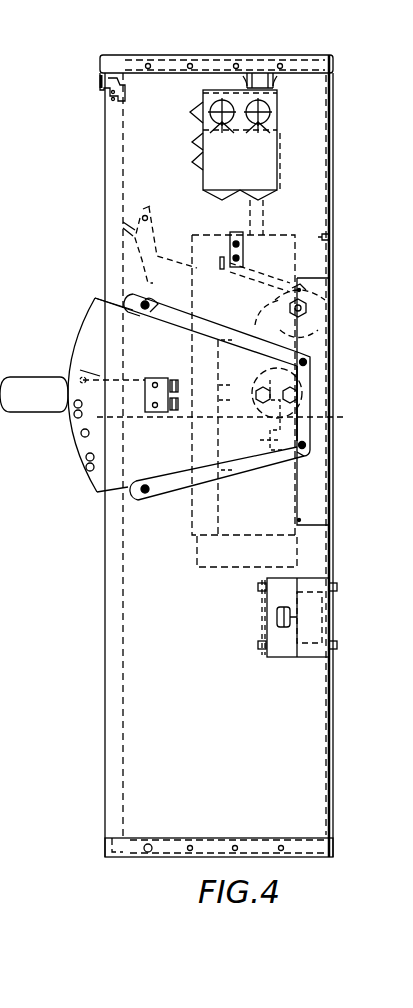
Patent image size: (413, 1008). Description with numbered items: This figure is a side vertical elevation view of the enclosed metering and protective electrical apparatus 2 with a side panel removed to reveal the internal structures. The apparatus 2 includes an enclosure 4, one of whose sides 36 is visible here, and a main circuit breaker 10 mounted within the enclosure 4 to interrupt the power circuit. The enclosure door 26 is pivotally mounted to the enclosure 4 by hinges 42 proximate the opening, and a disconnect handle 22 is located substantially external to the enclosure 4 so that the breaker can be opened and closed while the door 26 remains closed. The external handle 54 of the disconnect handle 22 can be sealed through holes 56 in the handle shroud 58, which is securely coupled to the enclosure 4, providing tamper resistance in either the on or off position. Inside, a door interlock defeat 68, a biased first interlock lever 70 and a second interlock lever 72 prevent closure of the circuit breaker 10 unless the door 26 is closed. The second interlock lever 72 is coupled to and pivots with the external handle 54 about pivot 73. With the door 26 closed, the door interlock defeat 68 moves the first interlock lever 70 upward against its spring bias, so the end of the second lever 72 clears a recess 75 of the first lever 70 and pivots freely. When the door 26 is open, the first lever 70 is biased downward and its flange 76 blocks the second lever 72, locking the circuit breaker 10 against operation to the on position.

The enclosed metering and protective electrical apparatus 2 is at (90, 814).
The enclosure 4 is at (340, 121).
The main circuit breaker 10 is at (212, 575).
The disconnect handle 22 is at (173, 385).
The door 26 is at (105, 710).
The side 36 is at (330, 548).
The hinges 42 is at (102, 73).
The external handle 54 is at (23, 407).
The holes 56 is at (85, 437).
The handle shroud 58 is at (95, 313).
The door interlock defeat 68 is at (128, 223).
The first interlock lever 70 is at (162, 323).
The second interlock lever 72 is at (183, 417).
The pivot 73 is at (293, 413).
The recess 75 is at (290, 333).
The flange 76 is at (300, 295).